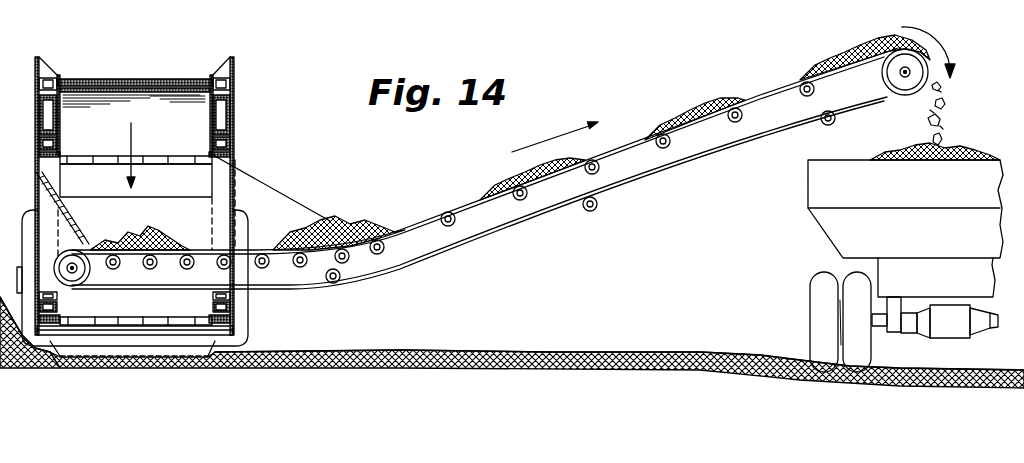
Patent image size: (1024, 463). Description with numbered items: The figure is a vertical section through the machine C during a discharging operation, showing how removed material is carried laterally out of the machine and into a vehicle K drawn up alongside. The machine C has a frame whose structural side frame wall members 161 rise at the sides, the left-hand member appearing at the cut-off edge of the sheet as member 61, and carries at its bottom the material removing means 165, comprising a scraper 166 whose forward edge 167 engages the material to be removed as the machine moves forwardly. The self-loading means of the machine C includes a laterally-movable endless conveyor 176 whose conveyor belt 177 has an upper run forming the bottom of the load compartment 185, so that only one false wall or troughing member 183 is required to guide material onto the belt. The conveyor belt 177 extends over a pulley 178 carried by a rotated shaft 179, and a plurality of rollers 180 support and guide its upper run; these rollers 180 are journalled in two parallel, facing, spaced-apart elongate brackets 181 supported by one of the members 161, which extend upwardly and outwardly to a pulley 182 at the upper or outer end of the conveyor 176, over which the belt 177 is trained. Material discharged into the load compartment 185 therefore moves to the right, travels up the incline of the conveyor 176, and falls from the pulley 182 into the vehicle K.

The side frame wall member 61 is at (36, 115).
The side frame wall member 161 is at (233, 98).
The machine C is at (240, 128).
The false wall or troughing member 183 is at (82, 214).
The load compartment 185 is at (197, 221).
The pulley 178 is at (88, 272).
The pulley shaft 179 is at (72, 270).
The conveyor belt 177 is at (415, 226).
The rollers 180 is at (300, 268).
The elongate brackets 181 is at (422, 238).
The laterally-movable endless conveyor 176 is at (631, 132).
The pulley 182 is at (927, 56).
The vehicle K is at (812, 227).
The material removing means 165 is at (168, 370).
The scraper 166 is at (128, 348).
The forward edge 167 is at (83, 357).